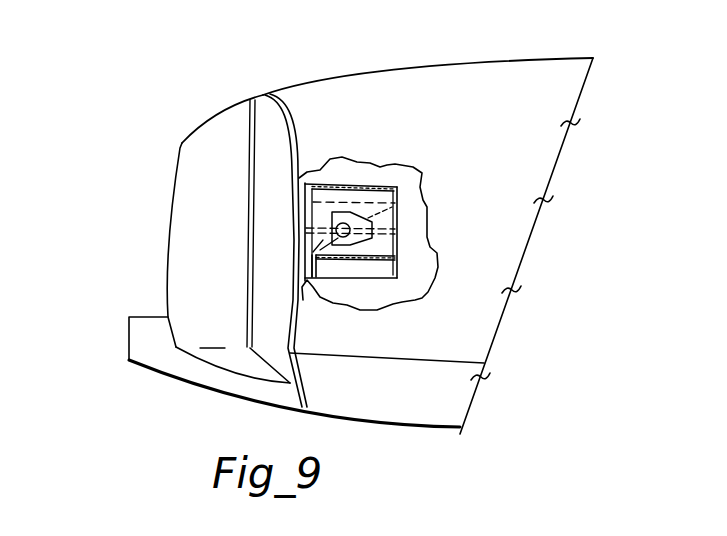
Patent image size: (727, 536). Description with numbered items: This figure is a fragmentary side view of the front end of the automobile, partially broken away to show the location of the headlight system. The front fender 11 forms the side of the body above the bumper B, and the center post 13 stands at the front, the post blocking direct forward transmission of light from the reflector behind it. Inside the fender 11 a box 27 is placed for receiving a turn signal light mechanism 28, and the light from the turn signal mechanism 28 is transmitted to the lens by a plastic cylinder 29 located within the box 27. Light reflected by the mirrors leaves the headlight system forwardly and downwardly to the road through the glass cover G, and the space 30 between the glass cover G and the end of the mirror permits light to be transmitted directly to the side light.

The front fender 11 is at (468, 137).
The center post 13 is at (200, 183).
The box 27 is at (389, 143).
The turn signal light mechanism 28 is at (372, 224).
The plastic cylinder 29 is at (348, 233).
The space 30 is at (303, 300).
The glass cover G is at (311, 233).
The bumper B is at (128, 359).